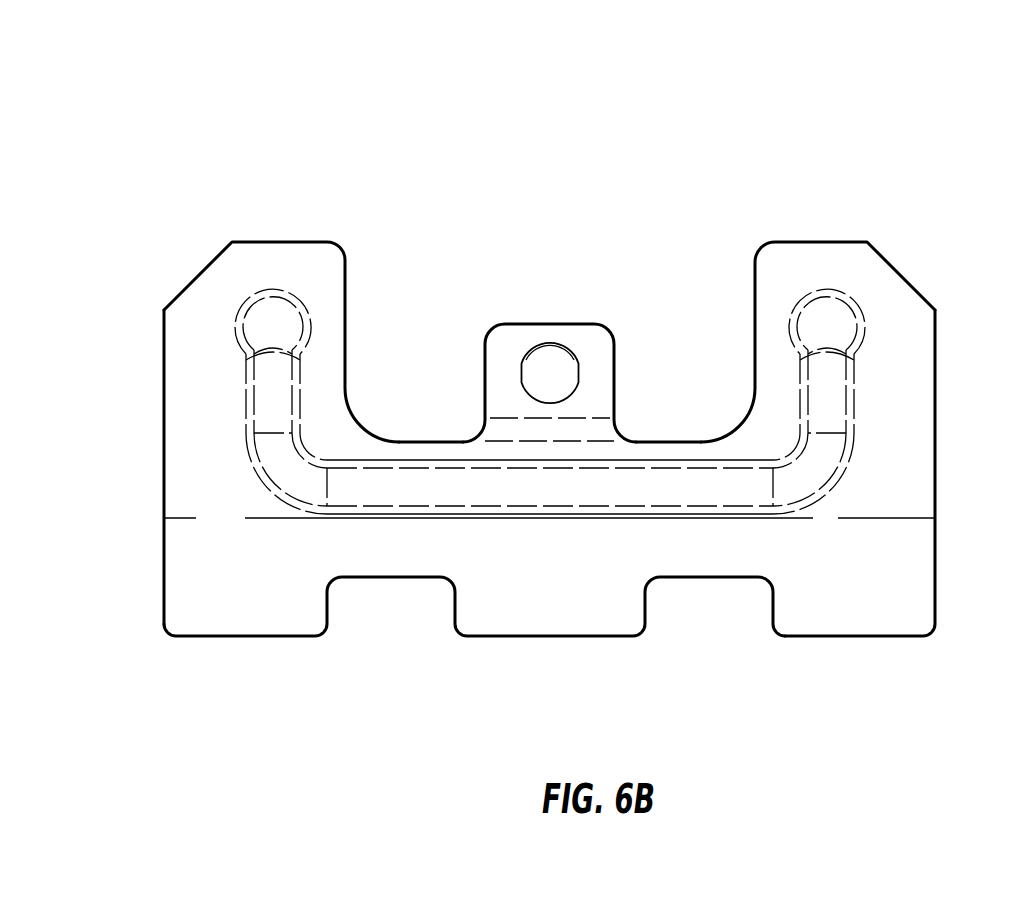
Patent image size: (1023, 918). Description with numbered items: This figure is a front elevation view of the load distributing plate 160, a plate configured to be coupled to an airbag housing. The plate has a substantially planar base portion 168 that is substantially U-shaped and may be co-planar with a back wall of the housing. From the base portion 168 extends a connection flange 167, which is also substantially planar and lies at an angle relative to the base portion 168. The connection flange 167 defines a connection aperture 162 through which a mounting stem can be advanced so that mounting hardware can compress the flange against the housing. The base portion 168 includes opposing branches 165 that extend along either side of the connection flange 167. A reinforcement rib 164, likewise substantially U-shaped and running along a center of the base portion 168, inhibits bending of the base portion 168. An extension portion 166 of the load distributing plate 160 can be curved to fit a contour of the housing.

The load distributing plate 160 is at (588, 387).
The connection aperture 162 is at (566, 385).
The reinforcement rib 164 is at (823, 390).
The opposing branches 165 is at (312, 270).
The extension portion 166 is at (568, 577).
The connection flange 167 is at (562, 332).
The base portion 168 is at (898, 433).